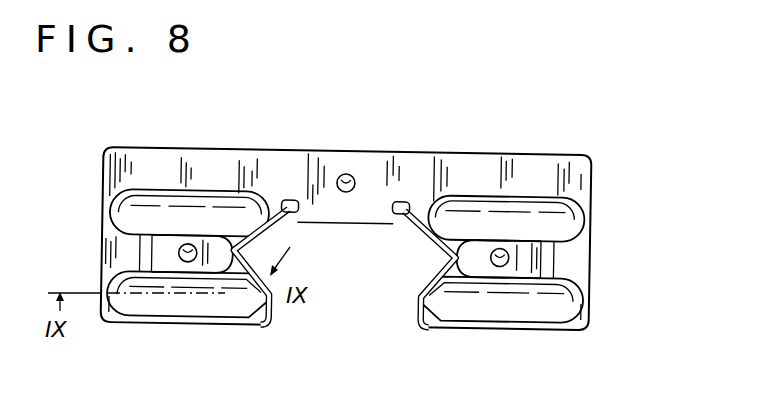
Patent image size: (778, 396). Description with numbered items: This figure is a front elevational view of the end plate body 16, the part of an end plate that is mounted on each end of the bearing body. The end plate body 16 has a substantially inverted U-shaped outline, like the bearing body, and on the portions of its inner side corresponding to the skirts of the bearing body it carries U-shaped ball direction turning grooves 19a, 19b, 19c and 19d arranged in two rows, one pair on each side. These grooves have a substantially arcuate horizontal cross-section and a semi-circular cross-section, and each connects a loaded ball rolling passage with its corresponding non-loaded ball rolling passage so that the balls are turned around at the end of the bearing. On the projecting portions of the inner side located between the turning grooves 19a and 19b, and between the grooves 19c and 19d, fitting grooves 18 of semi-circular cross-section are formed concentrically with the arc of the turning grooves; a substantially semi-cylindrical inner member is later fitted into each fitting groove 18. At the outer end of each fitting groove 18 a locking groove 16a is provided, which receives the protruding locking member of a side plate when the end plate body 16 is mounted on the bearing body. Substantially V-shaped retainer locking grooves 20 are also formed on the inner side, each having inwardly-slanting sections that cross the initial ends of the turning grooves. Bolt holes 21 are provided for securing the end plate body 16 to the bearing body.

The end plate body 16 is at (401, 152).
The locking groove 16a is at (143, 253).
The fitting groove 18 is at (178, 260).
The U-shaped ball direction turning groove 19a is at (125, 212).
The U-shaped ball direction turning groove 19b is at (140, 303).
The U-shaped ball direction turning groove 19c is at (553, 213).
The U-shaped ball direction turning groove 19d is at (553, 298).
The retainer locking groove 20 is at (293, 212).
The bolt hole 21 is at (190, 247).